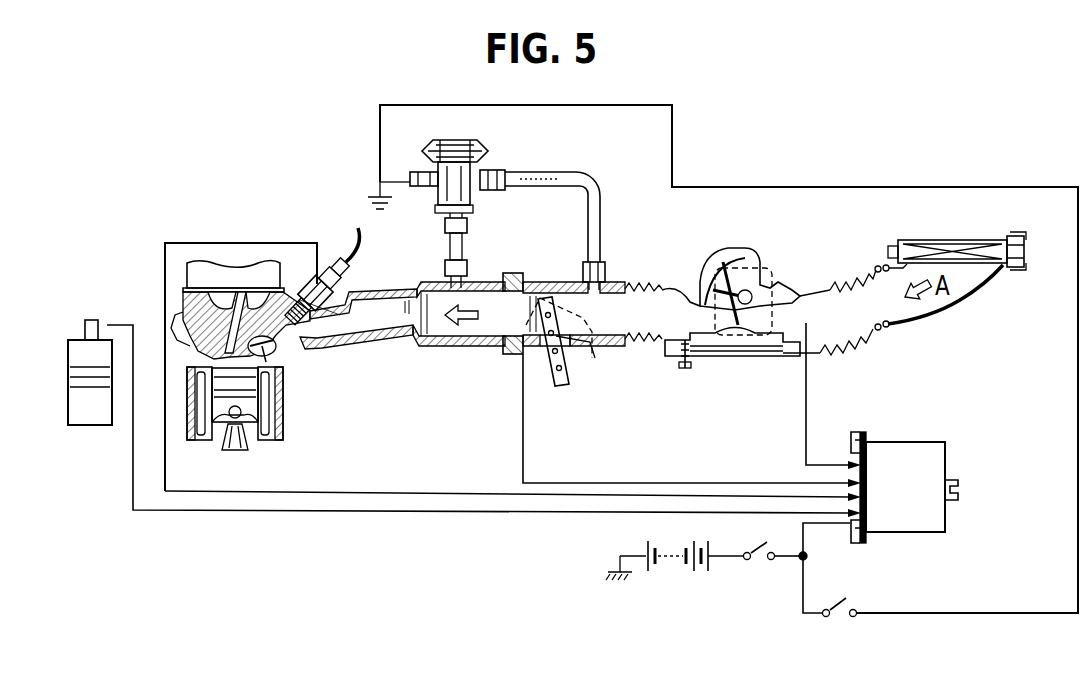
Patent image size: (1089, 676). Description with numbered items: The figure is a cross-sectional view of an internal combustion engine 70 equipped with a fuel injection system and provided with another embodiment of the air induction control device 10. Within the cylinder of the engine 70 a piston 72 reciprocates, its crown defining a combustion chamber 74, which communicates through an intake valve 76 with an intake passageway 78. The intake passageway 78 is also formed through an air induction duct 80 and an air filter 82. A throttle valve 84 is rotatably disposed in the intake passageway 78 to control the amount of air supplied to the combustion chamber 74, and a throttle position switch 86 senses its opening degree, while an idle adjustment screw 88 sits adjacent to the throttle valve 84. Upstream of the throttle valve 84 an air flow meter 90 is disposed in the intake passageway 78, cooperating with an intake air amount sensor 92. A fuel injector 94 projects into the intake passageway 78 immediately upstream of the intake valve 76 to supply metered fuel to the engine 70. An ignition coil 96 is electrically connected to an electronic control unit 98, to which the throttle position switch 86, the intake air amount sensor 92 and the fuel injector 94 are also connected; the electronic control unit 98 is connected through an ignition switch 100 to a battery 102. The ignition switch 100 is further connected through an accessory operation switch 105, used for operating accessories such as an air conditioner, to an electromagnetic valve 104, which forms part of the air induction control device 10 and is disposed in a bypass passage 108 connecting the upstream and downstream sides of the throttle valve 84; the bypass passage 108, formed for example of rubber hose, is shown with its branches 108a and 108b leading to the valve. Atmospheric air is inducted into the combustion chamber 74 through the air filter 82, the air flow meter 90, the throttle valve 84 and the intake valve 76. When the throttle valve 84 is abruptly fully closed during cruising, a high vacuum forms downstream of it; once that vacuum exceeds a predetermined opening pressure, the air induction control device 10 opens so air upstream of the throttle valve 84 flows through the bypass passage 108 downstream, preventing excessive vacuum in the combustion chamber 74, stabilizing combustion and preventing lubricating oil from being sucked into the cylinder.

The air induction control device 10 is at (482, 152).
The internal combustion engine 70 is at (241, 240).
The piston 72 is at (257, 442).
The combustion chamber 74 is at (275, 380).
The intake valve 76 is at (283, 362).
The intake passageway 78 is at (428, 342).
The air induction duct 80 is at (862, 328).
The air filter 82 is at (946, 240).
The throttle valve 84 is at (548, 283).
The throttle position switch 86 is at (592, 358).
The idle adjustment screw 88 is at (563, 387).
The air flow meter 90 is at (745, 256).
The intake air amount sensor 92 is at (782, 300).
The fuel injector 94 is at (330, 293).
The ignition coil 96 is at (87, 428).
The electronic control unit 98 is at (918, 499).
The ignition switch 100 is at (760, 563).
The battery 102 is at (668, 571).
The electromagnetic valve 104 is at (423, 187).
The accessory operation switch 105 is at (843, 618).
The bypass passage 108 is at (601, 218).
The conduit branch 108a is at (552, 183).
The conduit branch 108b is at (463, 252).